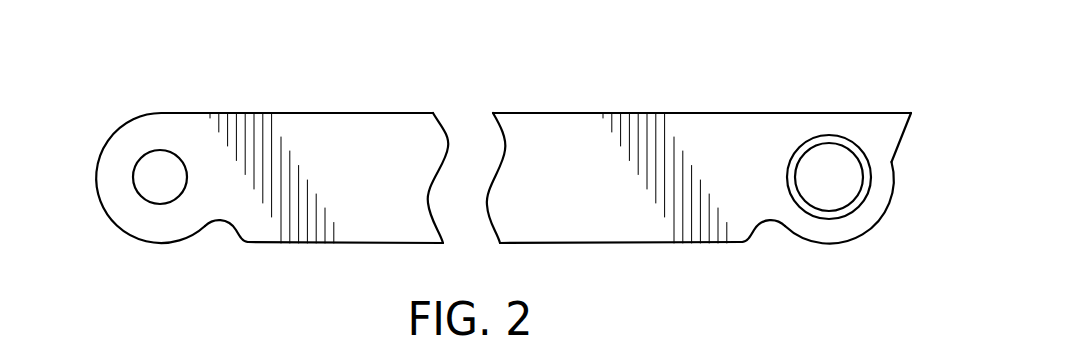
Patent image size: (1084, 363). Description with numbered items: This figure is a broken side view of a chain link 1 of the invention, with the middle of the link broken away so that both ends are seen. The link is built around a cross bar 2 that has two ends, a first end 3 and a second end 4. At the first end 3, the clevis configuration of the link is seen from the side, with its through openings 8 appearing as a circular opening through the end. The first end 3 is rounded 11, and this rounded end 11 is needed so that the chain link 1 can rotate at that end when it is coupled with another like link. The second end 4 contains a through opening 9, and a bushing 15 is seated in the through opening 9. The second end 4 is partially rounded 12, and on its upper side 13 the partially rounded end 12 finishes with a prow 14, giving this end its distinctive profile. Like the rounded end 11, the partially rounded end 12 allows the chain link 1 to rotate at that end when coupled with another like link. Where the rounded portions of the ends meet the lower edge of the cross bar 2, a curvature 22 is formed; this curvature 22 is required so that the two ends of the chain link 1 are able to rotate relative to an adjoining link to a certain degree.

The chain link 1 is at (619, 103).
The cross bar 2 is at (334, 192).
The first end 3 is at (90, 165).
The second end 4 is at (903, 190).
The through openings 8 is at (151, 191).
The through opening 9 is at (820, 191).
The rounded end 11 is at (121, 126).
The partially rounded end 12 is at (853, 238).
The upper side 13 is at (832, 113).
The prow 14 is at (880, 113).
The bushing 15 is at (864, 167).
The curvature 22 is at (222, 232).